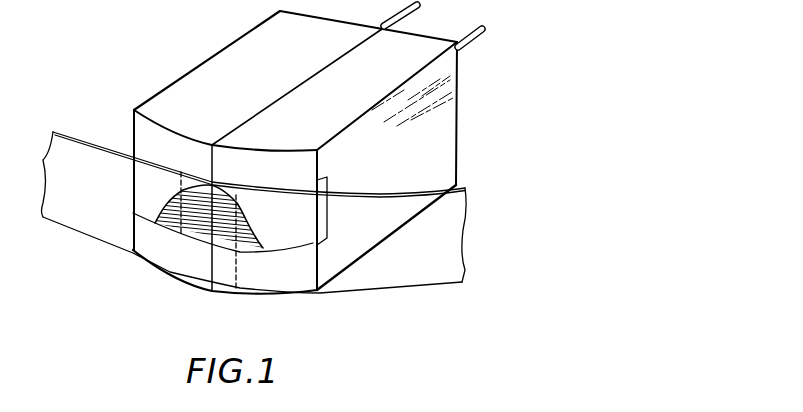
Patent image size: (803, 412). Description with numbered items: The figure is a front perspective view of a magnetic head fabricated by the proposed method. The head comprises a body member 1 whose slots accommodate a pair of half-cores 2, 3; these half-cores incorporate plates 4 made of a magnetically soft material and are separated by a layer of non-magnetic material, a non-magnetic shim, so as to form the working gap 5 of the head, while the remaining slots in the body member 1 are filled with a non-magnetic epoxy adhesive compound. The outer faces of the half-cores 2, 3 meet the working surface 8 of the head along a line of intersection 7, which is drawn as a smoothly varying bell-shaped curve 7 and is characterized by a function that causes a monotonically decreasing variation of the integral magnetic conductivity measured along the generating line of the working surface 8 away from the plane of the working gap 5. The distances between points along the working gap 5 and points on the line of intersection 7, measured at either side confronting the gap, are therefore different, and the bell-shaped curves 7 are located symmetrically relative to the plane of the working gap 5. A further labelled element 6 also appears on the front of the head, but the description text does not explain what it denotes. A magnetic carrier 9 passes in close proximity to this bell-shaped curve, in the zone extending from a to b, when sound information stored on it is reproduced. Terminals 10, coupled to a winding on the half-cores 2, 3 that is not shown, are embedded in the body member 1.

The body member 1 is at (365, 21).
The half-core 2 is at (162, 234).
The half-core 3 is at (250, 246).
The plates 4 is at (182, 234).
The working gap 5 is at (201, 269).
The pole face band 6 is at (147, 180).
The line of intersection 7 is at (160, 223).
The working surface 8 is at (147, 125).
The magnetic carrier 9 is at (365, 273).
The terminals 10 is at (421, 10).